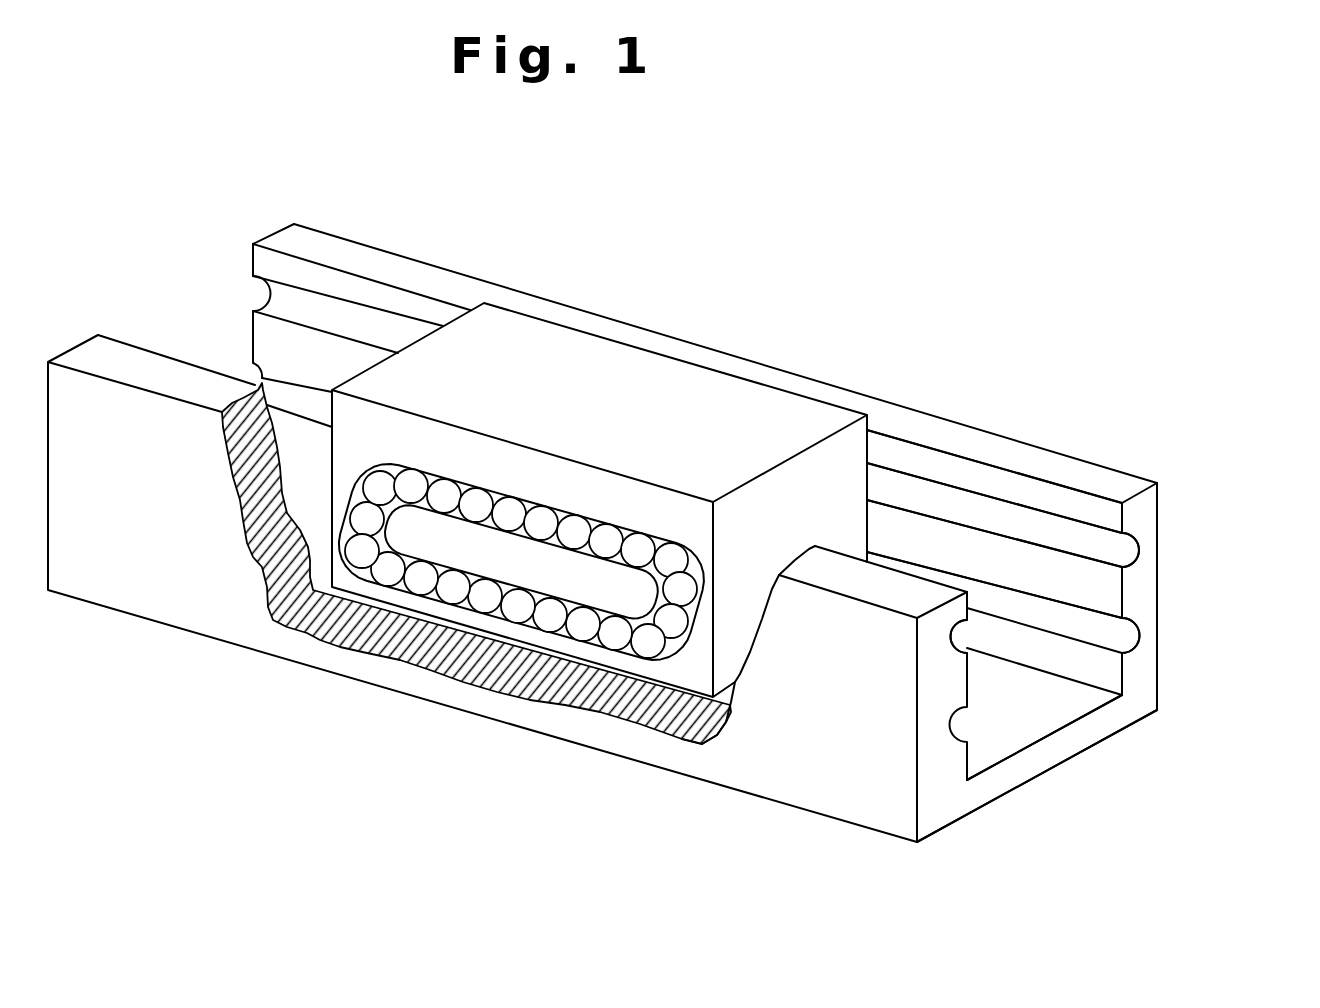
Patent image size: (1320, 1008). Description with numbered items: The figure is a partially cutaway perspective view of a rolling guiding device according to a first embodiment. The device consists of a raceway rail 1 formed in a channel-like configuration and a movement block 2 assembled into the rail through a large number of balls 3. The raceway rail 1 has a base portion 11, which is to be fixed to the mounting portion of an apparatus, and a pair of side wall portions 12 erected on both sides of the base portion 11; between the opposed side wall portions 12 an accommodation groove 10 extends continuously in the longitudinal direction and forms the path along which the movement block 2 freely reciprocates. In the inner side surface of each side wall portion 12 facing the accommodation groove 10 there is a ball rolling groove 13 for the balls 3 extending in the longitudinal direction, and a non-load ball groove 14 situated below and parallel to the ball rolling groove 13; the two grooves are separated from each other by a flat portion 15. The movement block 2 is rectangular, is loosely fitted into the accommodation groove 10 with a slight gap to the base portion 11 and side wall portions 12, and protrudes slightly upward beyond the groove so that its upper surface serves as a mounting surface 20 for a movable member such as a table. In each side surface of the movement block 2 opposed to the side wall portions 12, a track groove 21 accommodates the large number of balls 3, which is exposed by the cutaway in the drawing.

The raceway rail 1 is at (675, 556).
The movement block 2 is at (572, 504).
The balls 3 is at (525, 607).
The accommodation groove 10 is at (1028, 713).
The base portion 11 is at (993, 780).
The side wall portions 12 is at (1160, 530).
The ball rolling groove 13 is at (950, 497).
The non-load ball groove 14 is at (1083, 630).
The flat portion 15 is at (1082, 583).
The mounting surface 20 is at (605, 370).
The track groove 21 is at (367, 577).